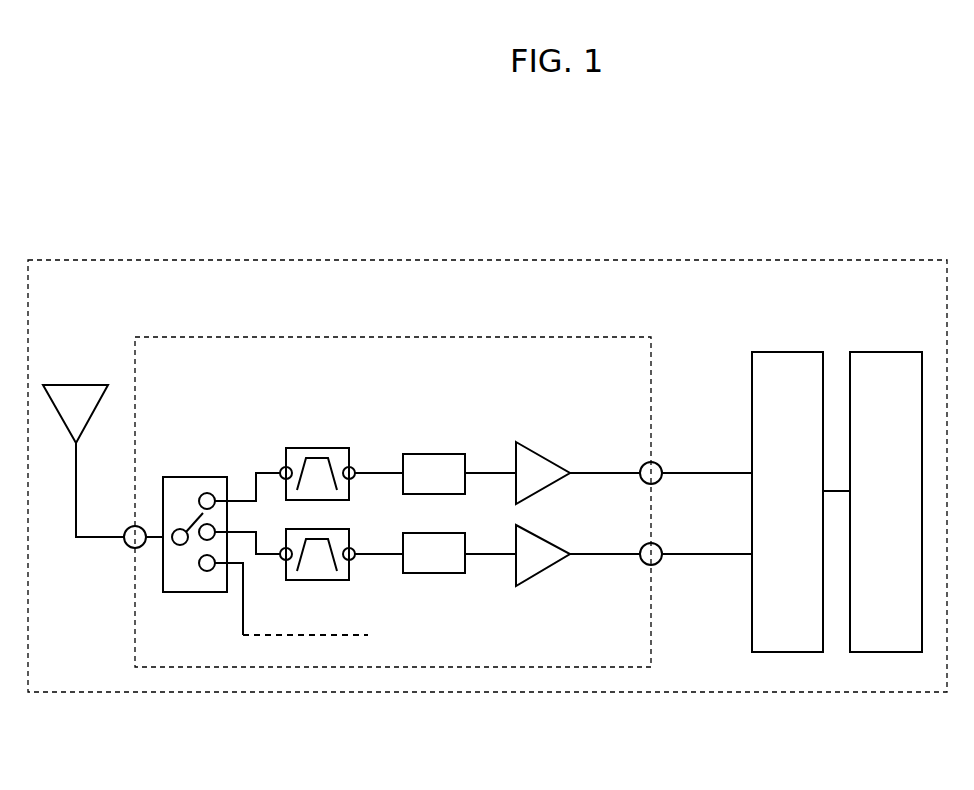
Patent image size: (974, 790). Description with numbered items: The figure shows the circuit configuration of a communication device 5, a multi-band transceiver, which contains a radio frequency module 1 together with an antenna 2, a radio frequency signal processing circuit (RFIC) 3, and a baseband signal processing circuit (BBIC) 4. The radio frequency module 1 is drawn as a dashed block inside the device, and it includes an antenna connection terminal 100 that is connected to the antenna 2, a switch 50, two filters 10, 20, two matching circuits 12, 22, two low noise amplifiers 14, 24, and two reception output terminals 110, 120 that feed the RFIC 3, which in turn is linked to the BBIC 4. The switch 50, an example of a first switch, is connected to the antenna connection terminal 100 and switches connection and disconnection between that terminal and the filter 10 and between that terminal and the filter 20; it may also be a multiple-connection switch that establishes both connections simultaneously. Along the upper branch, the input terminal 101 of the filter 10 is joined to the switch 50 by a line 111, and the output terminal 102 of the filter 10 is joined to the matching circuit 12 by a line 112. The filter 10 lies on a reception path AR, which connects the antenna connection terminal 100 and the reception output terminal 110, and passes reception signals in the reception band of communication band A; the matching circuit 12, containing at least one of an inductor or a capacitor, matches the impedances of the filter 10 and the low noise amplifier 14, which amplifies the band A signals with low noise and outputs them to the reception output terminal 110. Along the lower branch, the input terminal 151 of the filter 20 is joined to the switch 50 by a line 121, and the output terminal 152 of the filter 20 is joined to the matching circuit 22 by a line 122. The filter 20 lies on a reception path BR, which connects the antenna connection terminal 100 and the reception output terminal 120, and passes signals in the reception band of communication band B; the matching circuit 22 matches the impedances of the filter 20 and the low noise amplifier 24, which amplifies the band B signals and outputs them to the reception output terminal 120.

The communication device 5 is at (896, 260).
The radio frequency module 1 is at (653, 346).
The antenna 2 is at (72, 385).
The radio frequency signal processing circuit 3 is at (795, 352).
The baseband signal processing circuit 4 is at (880, 352).
The switch 50 is at (200, 477).
The antenna connection terminal 100 is at (126, 546).
The line 111 is at (281, 469).
The input terminal 101 is at (285, 480).
The filter 10 is at (352, 446).
The output terminal 102 is at (355, 479).
The line 112 is at (355, 470).
The matching circuit 12 is at (434, 453).
The reception path AR is at (487, 476).
The low noise amplifier 14 is at (544, 454).
The reception output terminal 110 is at (657, 463).
The line 121 is at (275, 557).
The input terminal 151 is at (282, 549).
The filter 20 is at (349, 582).
The output terminal 152 is at (352, 550).
The line 122 is at (384, 558).
The matching circuit 22 is at (442, 575).
The reception path BR is at (488, 558).
The low noise amplifier 24 is at (543, 574).
The reception output terminal 120 is at (657, 565).